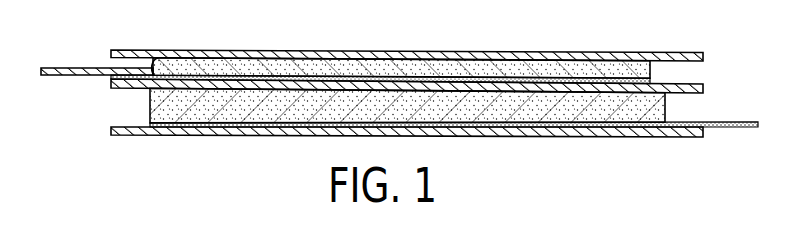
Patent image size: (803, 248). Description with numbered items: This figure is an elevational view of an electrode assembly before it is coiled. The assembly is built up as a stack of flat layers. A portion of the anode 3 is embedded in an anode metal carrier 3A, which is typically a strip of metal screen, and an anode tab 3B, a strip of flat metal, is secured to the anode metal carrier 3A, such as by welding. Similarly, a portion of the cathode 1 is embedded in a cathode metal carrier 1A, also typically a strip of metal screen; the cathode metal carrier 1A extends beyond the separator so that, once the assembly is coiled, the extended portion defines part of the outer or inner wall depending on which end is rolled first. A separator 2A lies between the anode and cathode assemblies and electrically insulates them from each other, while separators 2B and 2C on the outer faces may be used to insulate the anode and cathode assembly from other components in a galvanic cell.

The cathode 1 is at (667, 112).
The cathode metal carrier 1A is at (742, 130).
The separator 2A is at (703, 92).
The separator 2B is at (543, 137).
The separator 2C is at (497, 52).
The anode 3 is at (653, 71).
The anode metal carrier 3A is at (153, 68).
The anode tab 3B is at (67, 68).